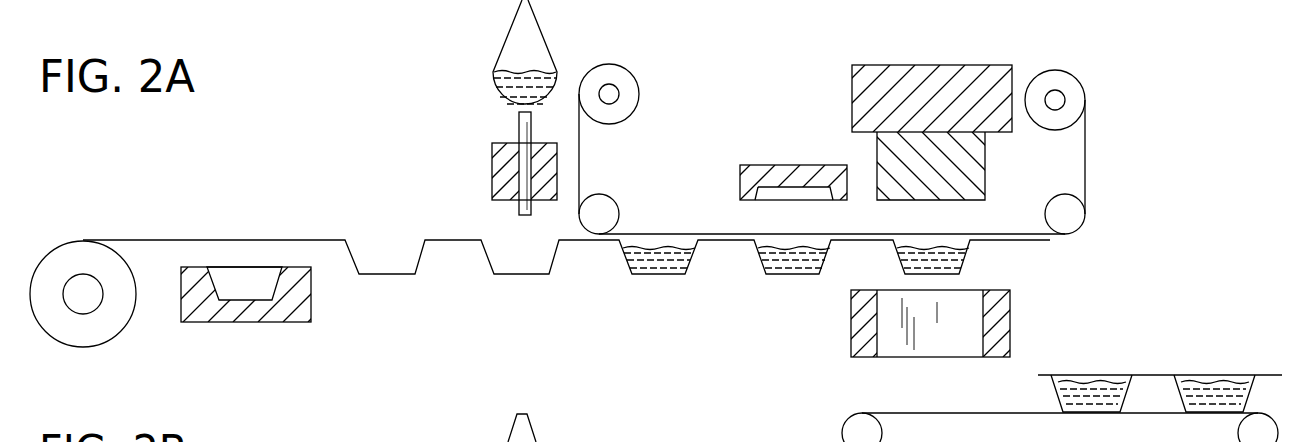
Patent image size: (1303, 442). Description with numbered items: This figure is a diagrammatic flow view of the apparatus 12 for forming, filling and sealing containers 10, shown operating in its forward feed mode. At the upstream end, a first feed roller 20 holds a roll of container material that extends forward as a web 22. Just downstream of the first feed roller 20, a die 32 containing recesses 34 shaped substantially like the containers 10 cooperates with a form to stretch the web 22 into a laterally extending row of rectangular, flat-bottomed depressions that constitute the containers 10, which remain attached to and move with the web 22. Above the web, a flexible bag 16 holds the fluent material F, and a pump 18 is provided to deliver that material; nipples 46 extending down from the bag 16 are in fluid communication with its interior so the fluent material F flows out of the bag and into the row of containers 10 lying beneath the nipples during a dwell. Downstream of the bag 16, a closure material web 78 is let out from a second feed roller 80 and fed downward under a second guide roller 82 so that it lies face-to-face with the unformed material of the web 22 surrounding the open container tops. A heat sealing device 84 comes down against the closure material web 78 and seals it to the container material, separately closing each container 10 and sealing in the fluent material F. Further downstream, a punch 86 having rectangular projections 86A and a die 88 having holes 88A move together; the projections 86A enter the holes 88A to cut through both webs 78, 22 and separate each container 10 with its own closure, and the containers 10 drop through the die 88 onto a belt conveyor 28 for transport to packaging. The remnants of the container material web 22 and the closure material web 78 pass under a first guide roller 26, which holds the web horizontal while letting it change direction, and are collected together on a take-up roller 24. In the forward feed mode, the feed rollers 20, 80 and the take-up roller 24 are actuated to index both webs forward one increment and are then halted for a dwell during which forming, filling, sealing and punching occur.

In FIG. 2A, the container 10 is at (385, 274).
In FIG. 2A, the apparatus 12 is at (1155, 108).
In FIG. 2A, the flexible bag 16 is at (567, 41).
In FIG. 2B, the flexible bag 16 is at (478, 428).
In FIG. 2A, the pump 18 is at (470, 168).
In FIG. 2B, the pump 18 is at (239, 438).
In FIG. 2A, the first feed roller 20 is at (82, 293).
In FIG. 2A, the web 22 is at (207, 240).
In FIG. 2A, the take-up roller 24 is at (1058, 99).
In FIG. 2A, the first guide roller 26 is at (1065, 219).
In FIG. 2A, the belt conveyor 28 is at (950, 412).
In FIG. 2A, the die 32 is at (257, 311).
In FIG. 2A, the recess 34 is at (274, 281).
In FIG. 2A, the nipple 46 is at (518, 130).
In FIG. 2A, the closure material web 78 is at (663, 236).
In FIG. 2A, the second feed roller 80 is at (612, 94).
In FIG. 2A, the second guide roller 82 is at (598, 215).
In FIG. 2A, the heat sealing device 84 is at (800, 165).
In FIG. 2A, the punch 86 is at (930, 65).
In FIG. 2A, the projection 86A is at (966, 161).
In FIG. 2A, the die 88 is at (848, 327).
In FIG. 2A, the hole 88A is at (990, 340).
In FIG. 2A, the fluent material F is at (523, 87).